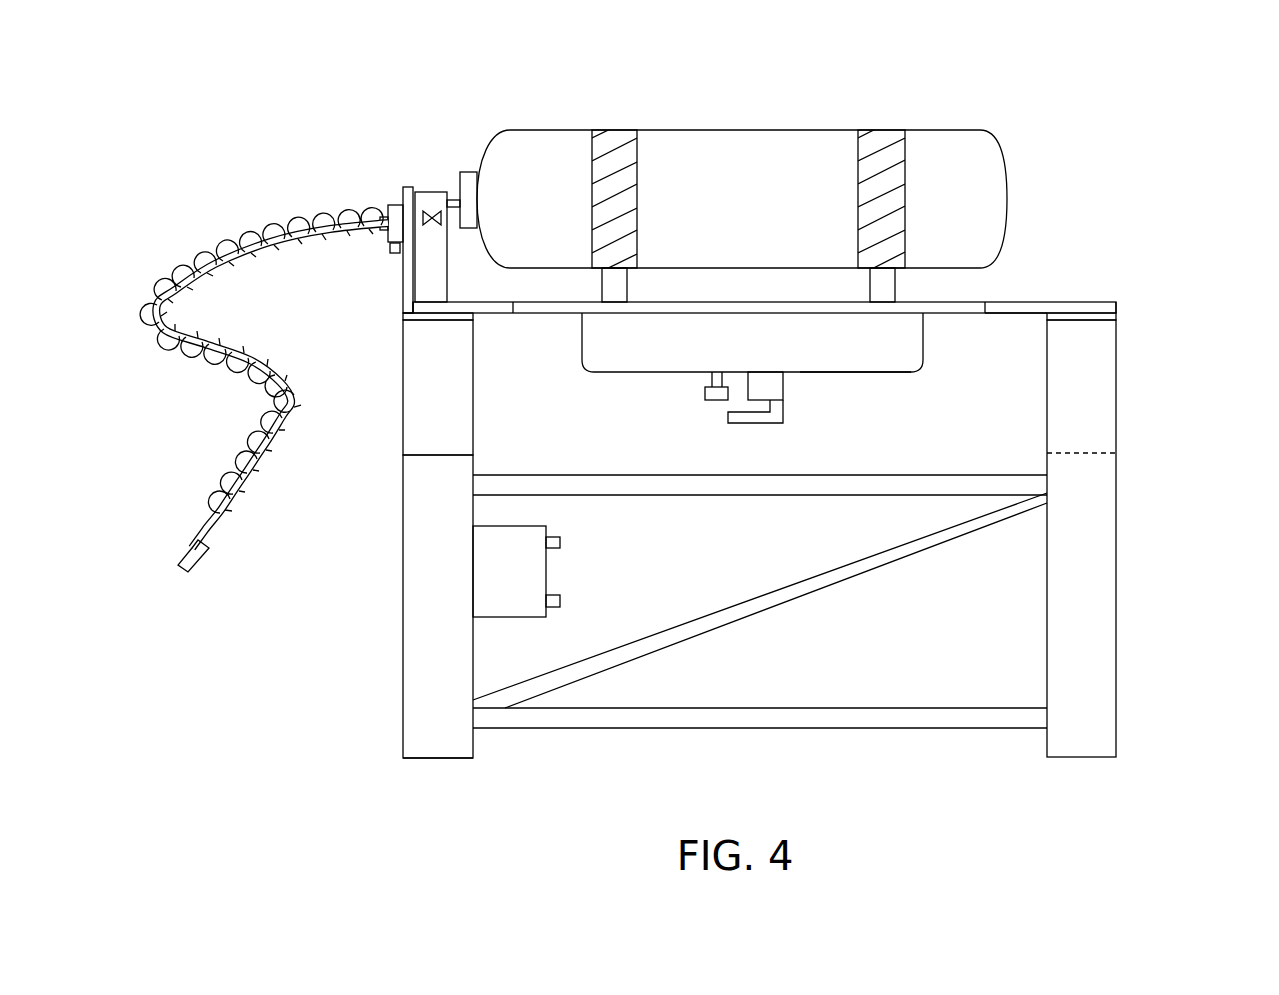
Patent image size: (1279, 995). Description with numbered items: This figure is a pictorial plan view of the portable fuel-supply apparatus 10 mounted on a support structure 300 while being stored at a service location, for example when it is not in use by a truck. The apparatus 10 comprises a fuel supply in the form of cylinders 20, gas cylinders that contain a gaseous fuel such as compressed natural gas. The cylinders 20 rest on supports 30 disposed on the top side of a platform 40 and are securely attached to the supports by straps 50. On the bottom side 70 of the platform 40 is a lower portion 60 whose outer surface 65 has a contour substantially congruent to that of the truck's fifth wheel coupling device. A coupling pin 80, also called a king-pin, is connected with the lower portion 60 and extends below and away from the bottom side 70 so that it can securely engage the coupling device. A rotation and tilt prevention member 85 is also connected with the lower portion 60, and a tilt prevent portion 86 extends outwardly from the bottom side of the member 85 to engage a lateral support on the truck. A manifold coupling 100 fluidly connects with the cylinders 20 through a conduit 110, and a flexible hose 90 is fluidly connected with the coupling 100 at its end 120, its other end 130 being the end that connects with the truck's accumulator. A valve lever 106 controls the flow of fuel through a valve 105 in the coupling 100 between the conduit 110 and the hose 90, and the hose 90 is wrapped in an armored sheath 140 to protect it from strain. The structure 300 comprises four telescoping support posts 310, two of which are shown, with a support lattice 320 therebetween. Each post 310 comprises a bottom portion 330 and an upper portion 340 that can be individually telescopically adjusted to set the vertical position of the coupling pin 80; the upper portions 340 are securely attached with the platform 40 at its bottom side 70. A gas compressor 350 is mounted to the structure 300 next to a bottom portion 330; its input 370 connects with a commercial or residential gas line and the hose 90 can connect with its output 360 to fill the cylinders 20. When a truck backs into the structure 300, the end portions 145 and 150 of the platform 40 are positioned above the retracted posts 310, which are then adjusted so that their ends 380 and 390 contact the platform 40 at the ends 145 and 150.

The portable fuel-supply apparatus 10 is at (1092, 101).
The cylinders 20 is at (982, 130).
The supports 30 is at (604, 290).
The platform 40 is at (1032, 300).
The straps 50 is at (614, 130).
The lower portion 60 is at (929, 366).
The outer surface 65 is at (872, 374).
The bottom side 70 is at (1015, 314).
The coupling pin 80 is at (713, 401).
The rotation and tilt prevention member 85 is at (787, 399).
The tilt prevent portion 86 is at (746, 424).
The flexible hose 90 is at (168, 289).
The manifold coupling 100 is at (427, 191).
The valve 105 is at (400, 262).
The valve lever 106 is at (390, 251).
The conduit 110 is at (452, 200).
The end 120 is at (386, 215).
The end 130 is at (183, 568).
The armored sheath 140 is at (258, 436).
The end portion 145 is at (400, 312).
The end portion 150 is at (1118, 303).
The support structure 300 is at (1166, 414).
The telescoping support posts 310 is at (456, 762).
The support lattice 320 is at (785, 734).
The bottom portions 330 is at (402, 628).
The upper portions 340 is at (402, 412).
The gas compressor 350 is at (548, 570).
The output 360 is at (560, 605).
The input 370 is at (560, 540).
The end 380 is at (425, 325).
The end 390 is at (1080, 321).